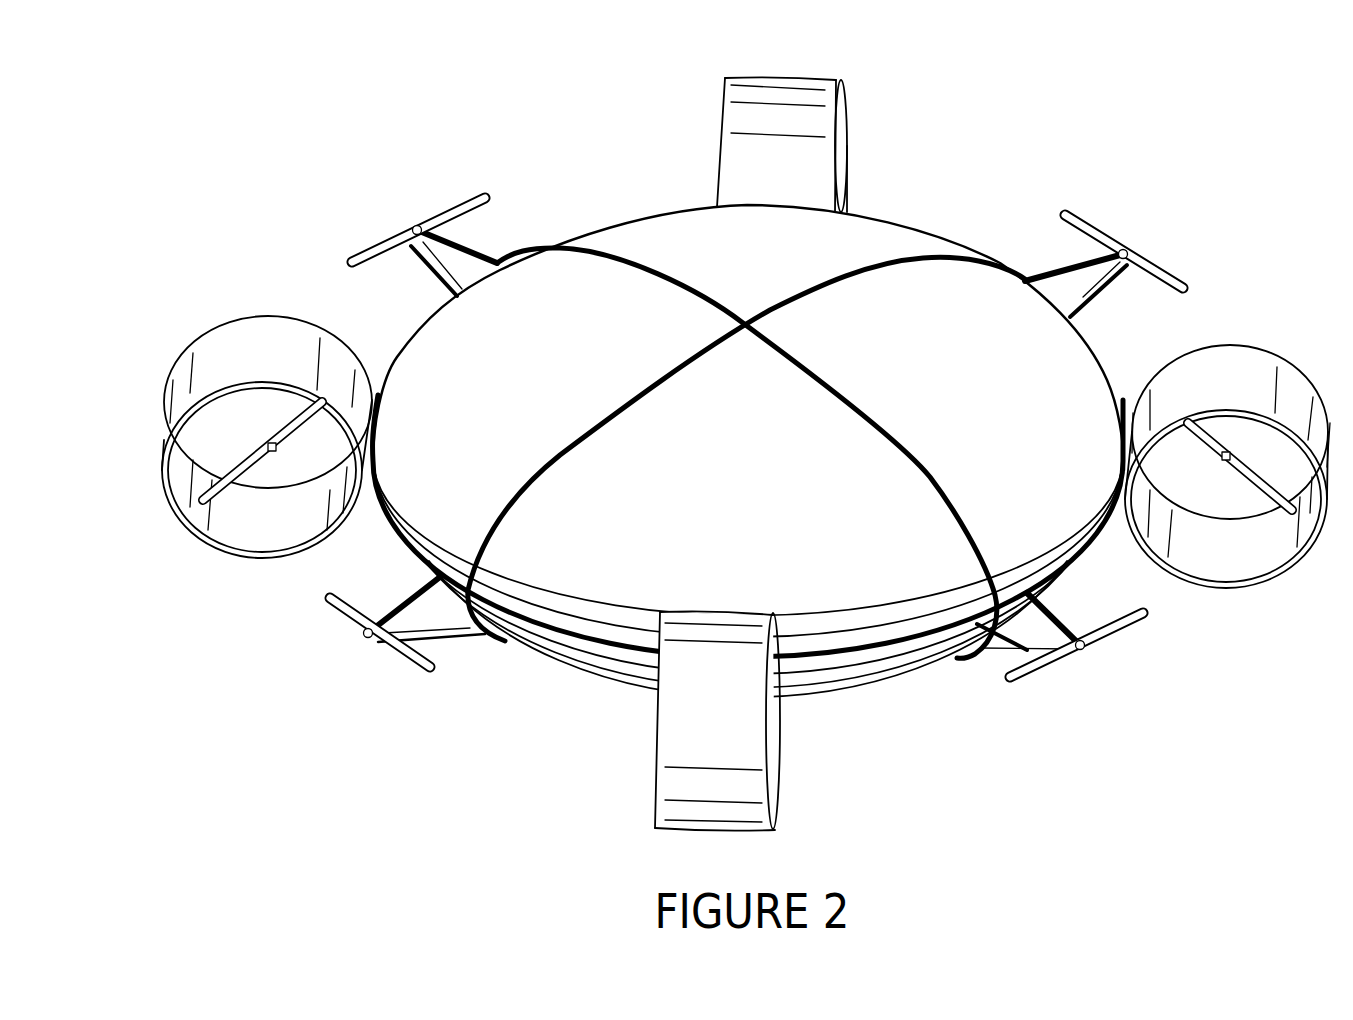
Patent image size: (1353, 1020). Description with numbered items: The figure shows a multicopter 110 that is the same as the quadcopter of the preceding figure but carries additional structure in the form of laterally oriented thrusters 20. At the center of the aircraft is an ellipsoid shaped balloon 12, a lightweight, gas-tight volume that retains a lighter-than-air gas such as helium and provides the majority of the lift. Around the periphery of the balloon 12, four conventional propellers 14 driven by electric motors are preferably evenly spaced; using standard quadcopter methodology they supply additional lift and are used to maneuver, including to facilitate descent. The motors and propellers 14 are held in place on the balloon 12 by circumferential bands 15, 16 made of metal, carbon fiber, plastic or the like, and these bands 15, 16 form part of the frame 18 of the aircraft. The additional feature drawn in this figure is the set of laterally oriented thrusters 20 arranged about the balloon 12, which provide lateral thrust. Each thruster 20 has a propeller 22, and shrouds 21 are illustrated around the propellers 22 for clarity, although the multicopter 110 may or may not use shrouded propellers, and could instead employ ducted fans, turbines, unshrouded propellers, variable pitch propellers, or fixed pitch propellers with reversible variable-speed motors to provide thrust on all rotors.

The multicopter 110 is at (1045, 117).
The ellipsoid shaped balloon 12 is at (572, 578).
The propellers 14 is at (365, 245).
The band 15 is at (795, 370).
The band 16 is at (586, 445).
The frame 18 is at (590, 225).
The laterally oriented thrusters 20 is at (857, 107).
The shrouds 21 is at (195, 527).
The propellers 22 is at (240, 490).